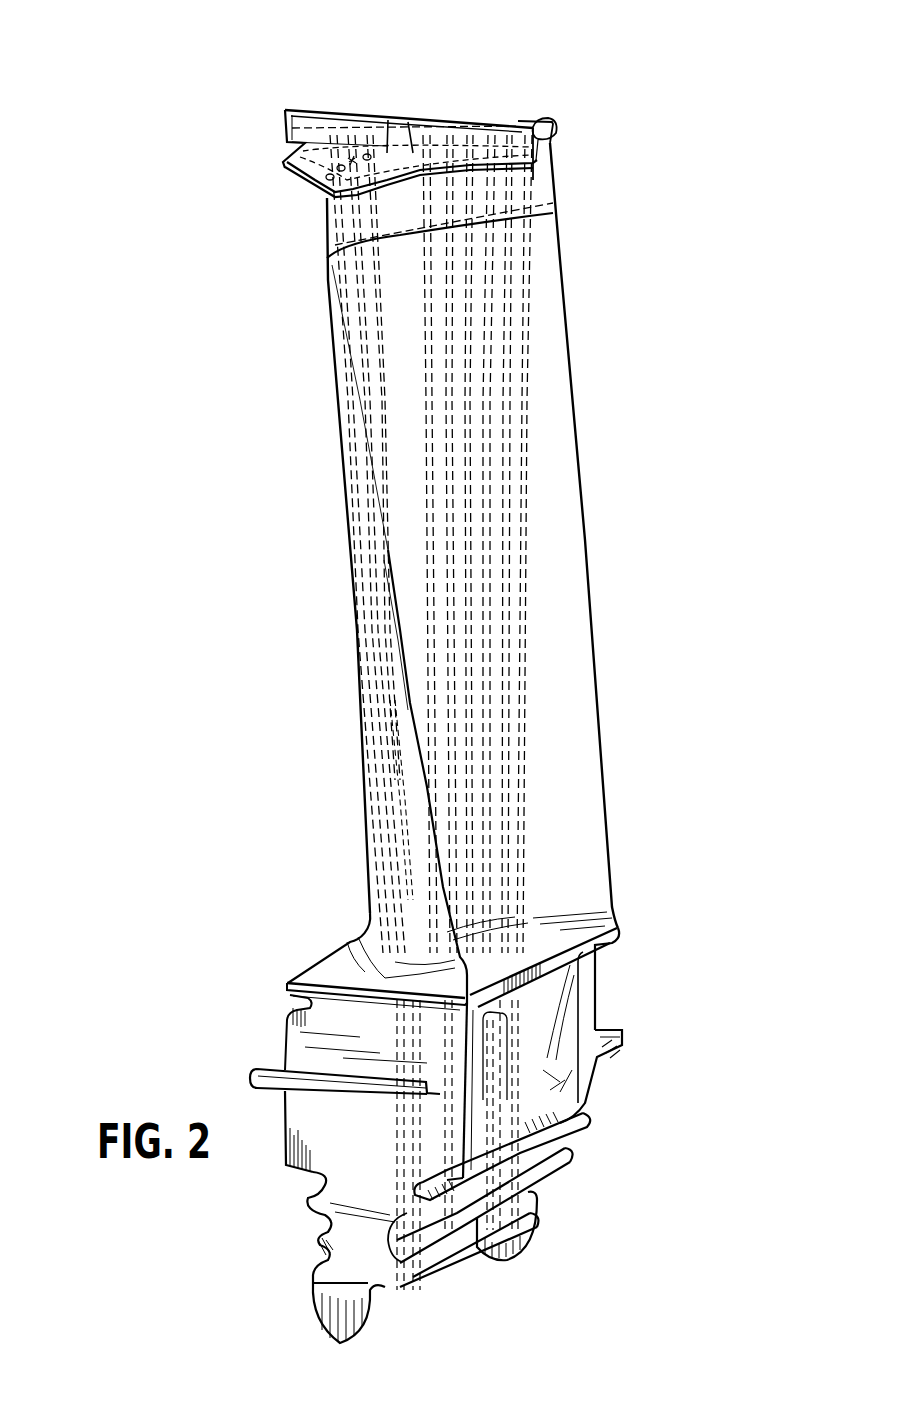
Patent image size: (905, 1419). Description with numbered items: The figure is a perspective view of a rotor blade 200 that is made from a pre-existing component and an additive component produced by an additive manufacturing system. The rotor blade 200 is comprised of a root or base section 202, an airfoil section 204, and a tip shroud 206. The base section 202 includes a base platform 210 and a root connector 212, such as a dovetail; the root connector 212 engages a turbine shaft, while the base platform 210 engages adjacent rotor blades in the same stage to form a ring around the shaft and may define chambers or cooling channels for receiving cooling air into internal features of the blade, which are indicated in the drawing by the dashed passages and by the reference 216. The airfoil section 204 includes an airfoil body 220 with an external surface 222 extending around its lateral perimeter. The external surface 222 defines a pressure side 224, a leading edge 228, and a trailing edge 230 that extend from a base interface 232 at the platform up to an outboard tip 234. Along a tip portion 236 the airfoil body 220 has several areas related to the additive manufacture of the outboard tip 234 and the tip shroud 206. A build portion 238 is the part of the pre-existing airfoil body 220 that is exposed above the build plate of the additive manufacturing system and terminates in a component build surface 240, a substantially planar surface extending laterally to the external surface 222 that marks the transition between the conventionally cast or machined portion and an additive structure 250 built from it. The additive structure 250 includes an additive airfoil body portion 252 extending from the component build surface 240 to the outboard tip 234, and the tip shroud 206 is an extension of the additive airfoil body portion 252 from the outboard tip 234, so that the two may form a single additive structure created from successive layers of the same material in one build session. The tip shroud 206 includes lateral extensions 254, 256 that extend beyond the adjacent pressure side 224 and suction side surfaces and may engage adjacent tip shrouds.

The rotor blade 200 is at (292, 84).
The base section 202 is at (697, 913).
The airfoil section 204 is at (697, 912).
The tip shroud 206 is at (373, 120).
The base platform 210 is at (350, 993).
The root connector 212 is at (348, 1240).
The cooling passage 216 is at (387, 767).
The airfoil body 220 is at (387, 365).
The external surface 222 is at (347, 500).
The pressure side 224 is at (490, 585).
The leading edge 228 is at (407, 708).
The trailing edge 230 is at (595, 693).
The base interface 232 is at (377, 943).
The outboard tip 234 is at (552, 137).
The tip portion 236 is at (737, 117).
The build portion 238 is at (270, 202).
The component build surface 240 is at (330, 195).
The additive structure 250 is at (537, 132).
The additive airfoil body portion 252 is at (547, 153).
The lateral extension 254 is at (307, 140).
The lateral extension 256 is at (548, 125).